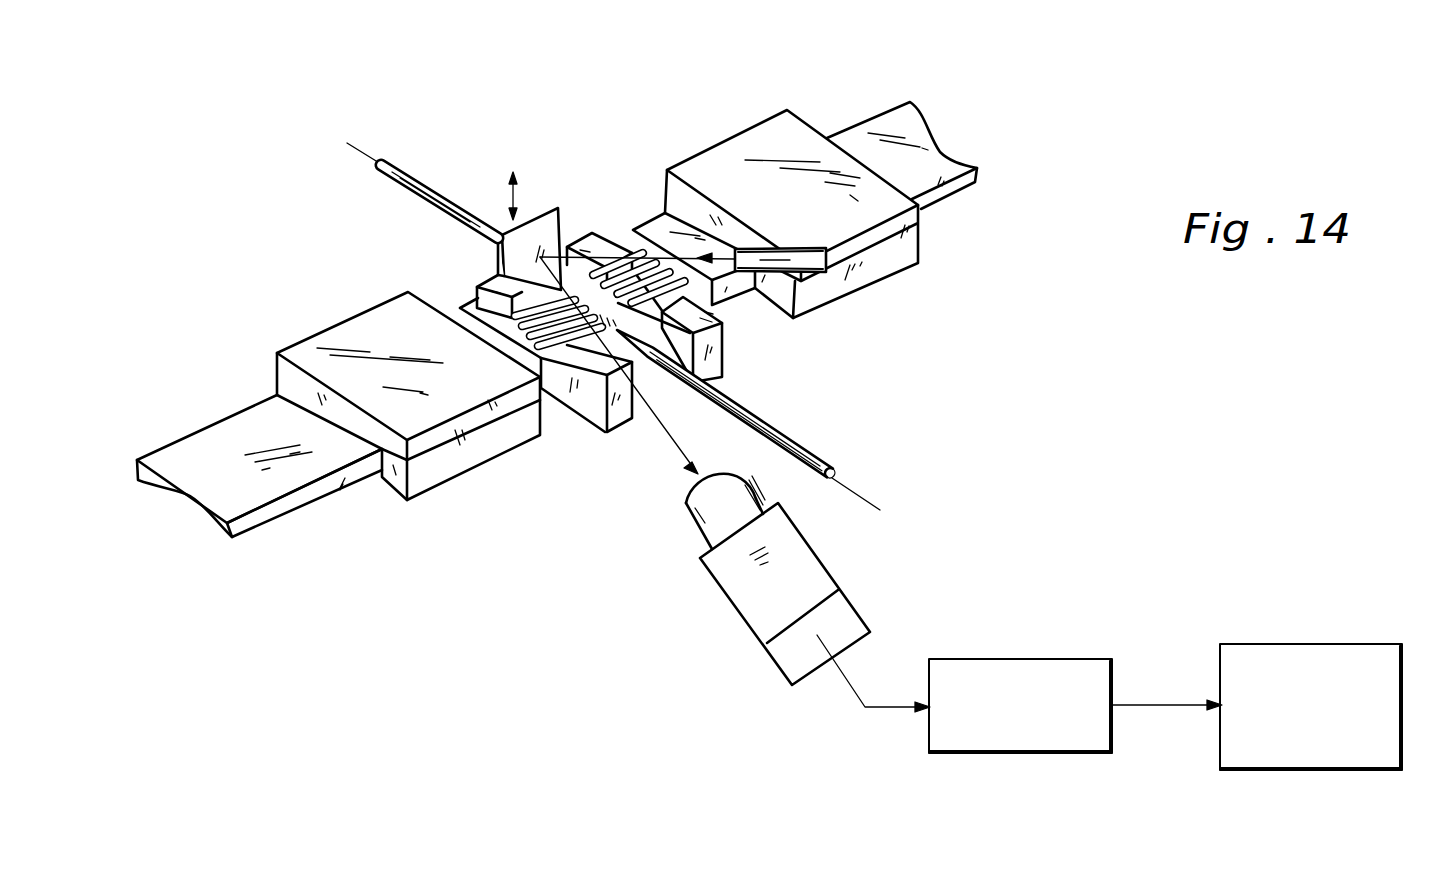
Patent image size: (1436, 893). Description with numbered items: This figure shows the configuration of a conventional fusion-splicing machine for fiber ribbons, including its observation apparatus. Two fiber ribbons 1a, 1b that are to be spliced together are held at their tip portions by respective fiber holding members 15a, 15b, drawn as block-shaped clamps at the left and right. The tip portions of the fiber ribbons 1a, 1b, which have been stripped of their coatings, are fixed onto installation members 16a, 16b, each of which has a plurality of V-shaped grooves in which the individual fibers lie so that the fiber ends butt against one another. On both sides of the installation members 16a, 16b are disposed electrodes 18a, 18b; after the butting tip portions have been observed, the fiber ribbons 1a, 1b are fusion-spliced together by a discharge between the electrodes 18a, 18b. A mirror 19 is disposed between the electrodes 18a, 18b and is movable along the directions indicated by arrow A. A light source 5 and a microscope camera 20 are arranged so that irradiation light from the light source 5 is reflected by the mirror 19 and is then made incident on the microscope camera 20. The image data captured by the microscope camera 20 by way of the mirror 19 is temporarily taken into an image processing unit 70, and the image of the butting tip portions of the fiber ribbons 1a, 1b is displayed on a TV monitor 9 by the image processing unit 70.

The fiber ribbon 1a is at (202, 445).
The fiber ribbon 1b is at (938, 152).
The fiber holding member 15a is at (387, 318).
The fiber holding member 15b is at (722, 163).
The installation member 16a is at (492, 277).
The installation member 16b is at (600, 248).
The electrode 18a is at (412, 180).
The electrode 18b is at (803, 452).
The mirror 19 is at (543, 210).
The light source 5 is at (802, 250).
The microscope camera 20 is at (750, 587).
The image processing unit 70 is at (1028, 659).
The TV monitor 9 is at (1328, 644).
The arrow A is at (510, 197).